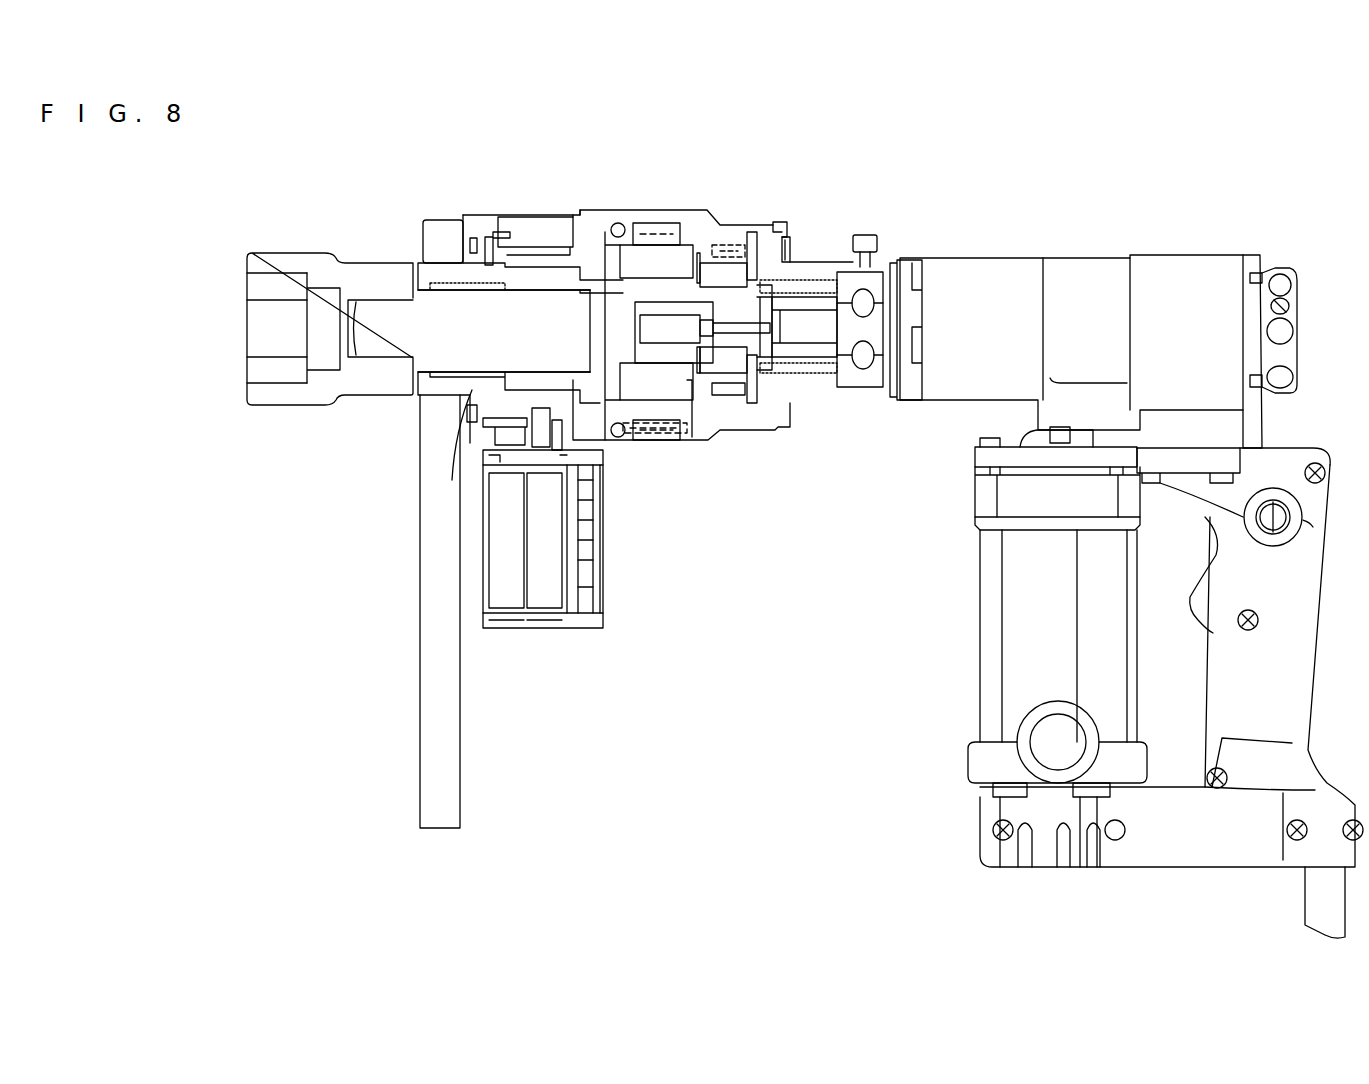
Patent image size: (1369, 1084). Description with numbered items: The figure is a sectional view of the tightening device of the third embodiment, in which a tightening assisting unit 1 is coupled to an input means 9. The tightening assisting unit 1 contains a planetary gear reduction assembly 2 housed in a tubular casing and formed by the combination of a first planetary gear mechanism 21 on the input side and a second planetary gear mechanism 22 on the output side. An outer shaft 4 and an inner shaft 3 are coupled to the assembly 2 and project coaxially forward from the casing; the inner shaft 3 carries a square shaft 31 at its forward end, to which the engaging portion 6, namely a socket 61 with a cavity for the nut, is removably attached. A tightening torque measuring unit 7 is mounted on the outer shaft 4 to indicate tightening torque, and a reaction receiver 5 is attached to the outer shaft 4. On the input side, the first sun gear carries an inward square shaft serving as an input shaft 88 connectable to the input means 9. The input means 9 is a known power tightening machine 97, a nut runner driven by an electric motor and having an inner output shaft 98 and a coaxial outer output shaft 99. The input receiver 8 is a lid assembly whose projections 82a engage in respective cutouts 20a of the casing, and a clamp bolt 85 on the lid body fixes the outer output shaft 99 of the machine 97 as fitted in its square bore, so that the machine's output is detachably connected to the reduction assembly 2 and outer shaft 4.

The tightening assisting unit 1 is at (635, 325).
The planetary gear reduction assembly 2 is at (687, 259).
The inner shaft 3 is at (463, 347).
The outer shaft 4 is at (463, 385).
The reaction receiver 5 is at (437, 692).
The engaging portion 6 is at (330, 372).
The socket 61 is at (330, 304).
The tightening torque measuring unit 7 is at (620, 552).
The input receiver 8 is at (1028, 346).
The input means 9 is at (1129, 686).
The power tightening machine 97 is at (1165, 693).
The cutouts 20a is at (787, 227).
The first planetary gear mechanism 21 is at (724, 236).
The second planetary gear mechanism 22 is at (656, 214).
The square shaft 31 is at (373, 323).
The projections 82a is at (788, 237).
The clamp bolt 85 is at (870, 243).
The input shaft 88 is at (758, 342).
The inner output shaft 98 is at (815, 337).
The outer output shaft 99 is at (882, 372).